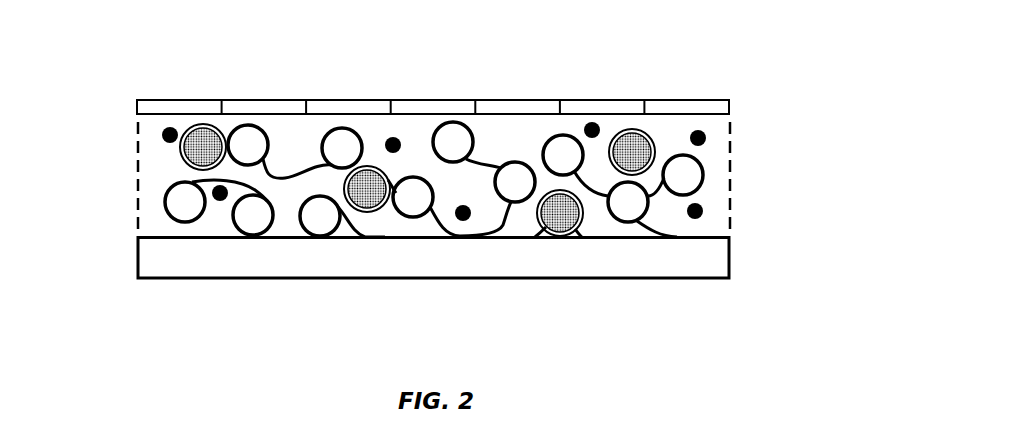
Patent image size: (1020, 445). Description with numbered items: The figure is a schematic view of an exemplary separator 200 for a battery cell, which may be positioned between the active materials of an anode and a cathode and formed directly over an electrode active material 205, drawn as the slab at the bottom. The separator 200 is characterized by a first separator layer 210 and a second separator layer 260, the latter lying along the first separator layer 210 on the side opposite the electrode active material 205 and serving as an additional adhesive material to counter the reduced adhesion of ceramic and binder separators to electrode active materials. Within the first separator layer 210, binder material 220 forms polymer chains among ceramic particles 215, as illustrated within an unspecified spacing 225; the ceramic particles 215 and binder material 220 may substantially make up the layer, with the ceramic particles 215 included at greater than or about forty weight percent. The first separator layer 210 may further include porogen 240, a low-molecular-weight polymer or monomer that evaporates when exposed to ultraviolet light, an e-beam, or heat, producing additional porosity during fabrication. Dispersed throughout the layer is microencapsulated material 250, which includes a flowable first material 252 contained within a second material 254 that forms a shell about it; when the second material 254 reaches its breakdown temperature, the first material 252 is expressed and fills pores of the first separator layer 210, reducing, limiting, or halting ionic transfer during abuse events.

The separator 200 is at (323, 82).
The electrode active material 205 is at (227, 280).
The first separator layer 210 is at (732, 157).
The ceramic particles 215 is at (238, 127).
The binder material 220 is at (482, 162).
The spacing 225 is at (628, 125).
The porogen 240 is at (162, 137).
The microencapsulated material 250 is at (574, 236).
The first material 252 is at (559, 236).
The second material 254 is at (540, 230).
The second separator layer 260 is at (423, 100).